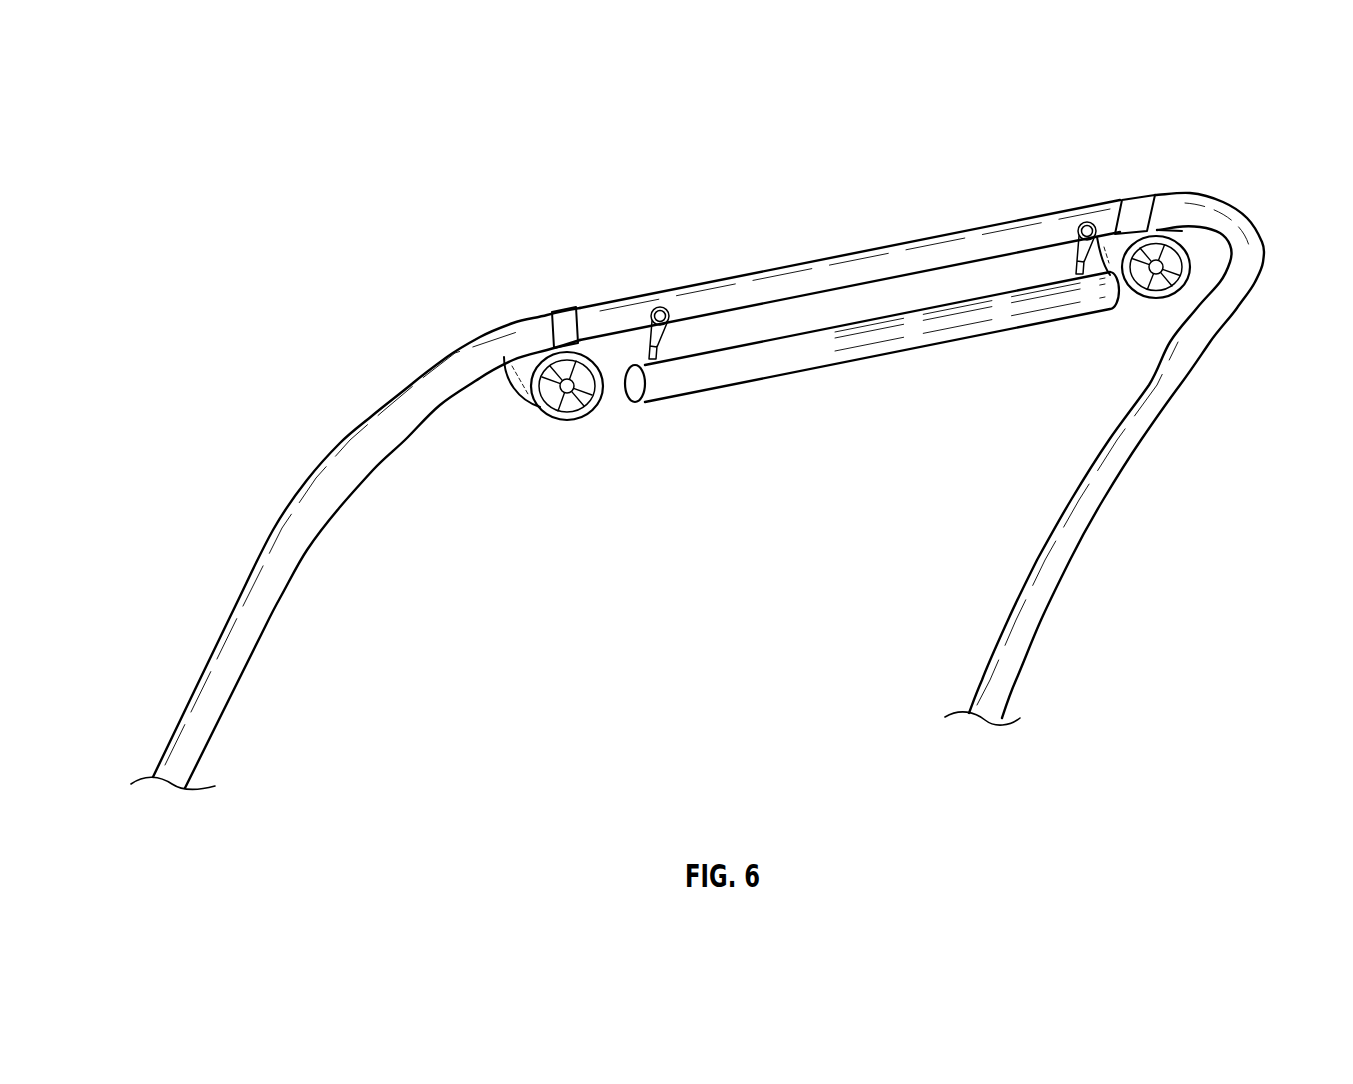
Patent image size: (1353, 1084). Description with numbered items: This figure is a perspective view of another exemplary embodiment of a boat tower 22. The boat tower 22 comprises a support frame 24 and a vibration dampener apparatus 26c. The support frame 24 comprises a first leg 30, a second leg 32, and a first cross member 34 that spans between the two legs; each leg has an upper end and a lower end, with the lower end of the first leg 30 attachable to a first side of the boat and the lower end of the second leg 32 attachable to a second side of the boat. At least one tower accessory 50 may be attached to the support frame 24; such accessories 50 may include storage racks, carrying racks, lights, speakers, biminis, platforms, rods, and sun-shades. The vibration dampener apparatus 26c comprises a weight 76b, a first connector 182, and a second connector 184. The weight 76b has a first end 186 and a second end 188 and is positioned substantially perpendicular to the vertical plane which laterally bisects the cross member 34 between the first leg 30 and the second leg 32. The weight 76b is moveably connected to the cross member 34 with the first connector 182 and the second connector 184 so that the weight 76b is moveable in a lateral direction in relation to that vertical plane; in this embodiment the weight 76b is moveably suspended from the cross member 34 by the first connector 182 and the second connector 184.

The boat tower 22 is at (704, 456).
The support frame 24 is at (434, 369).
The vibration dampener apparatus 26c is at (862, 374).
The first leg 30 is at (1098, 478).
The second leg 32 is at (243, 614).
The first cross member 34 is at (590, 317).
The tower accessory 50 is at (552, 421).
The weight 76b is at (943, 343).
The first connector 182 is at (642, 332).
The second connector 184 is at (1077, 229).
The first end 186 is at (641, 403).
The second end 188 is at (1104, 311).